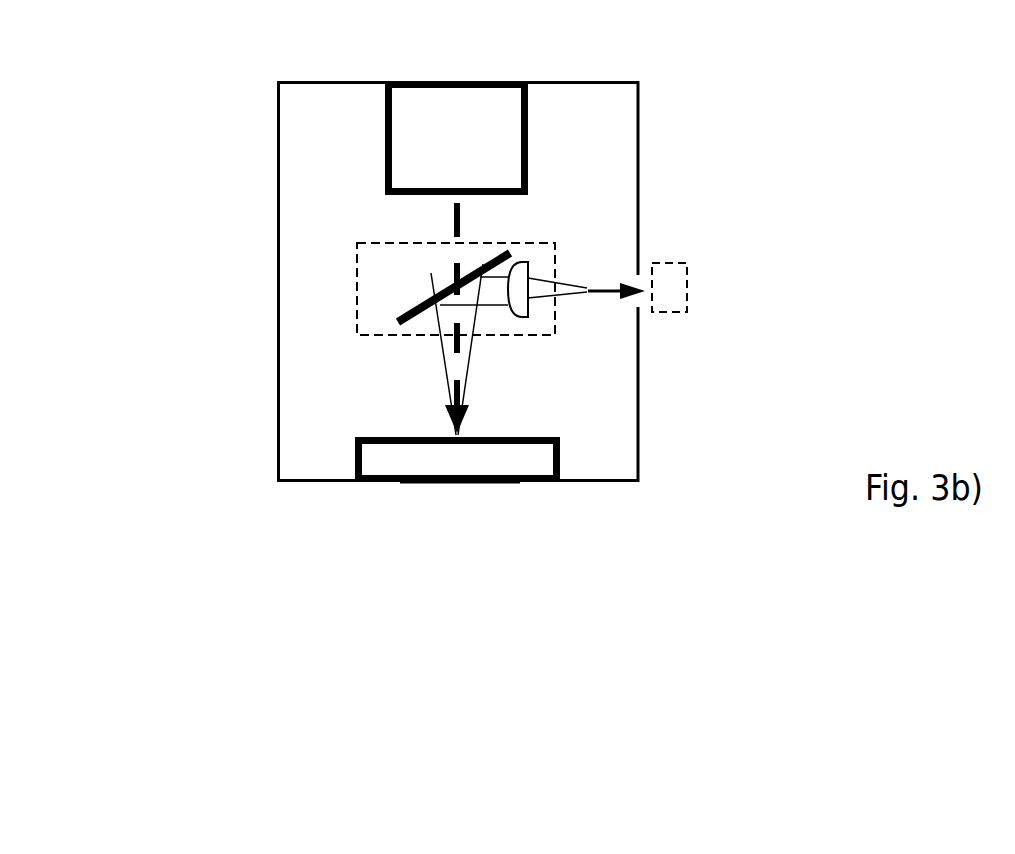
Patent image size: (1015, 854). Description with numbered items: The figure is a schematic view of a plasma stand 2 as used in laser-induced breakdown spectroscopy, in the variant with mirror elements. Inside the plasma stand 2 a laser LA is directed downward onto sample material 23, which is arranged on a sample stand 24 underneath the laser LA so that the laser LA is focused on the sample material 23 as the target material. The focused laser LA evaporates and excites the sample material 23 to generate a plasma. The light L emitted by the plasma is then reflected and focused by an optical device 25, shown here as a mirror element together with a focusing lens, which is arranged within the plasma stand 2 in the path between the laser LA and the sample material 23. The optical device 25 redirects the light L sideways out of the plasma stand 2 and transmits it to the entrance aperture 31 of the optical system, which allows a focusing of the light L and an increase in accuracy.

The plasma stand 2 is at (226, 106).
The sample material 23 is at (395, 457).
The sample stand 24 is at (457, 482).
The optical device 25 is at (357, 288).
The entrance aperture 31 is at (672, 290).
The laser LA is at (479, 213).
The light L is at (616, 268).